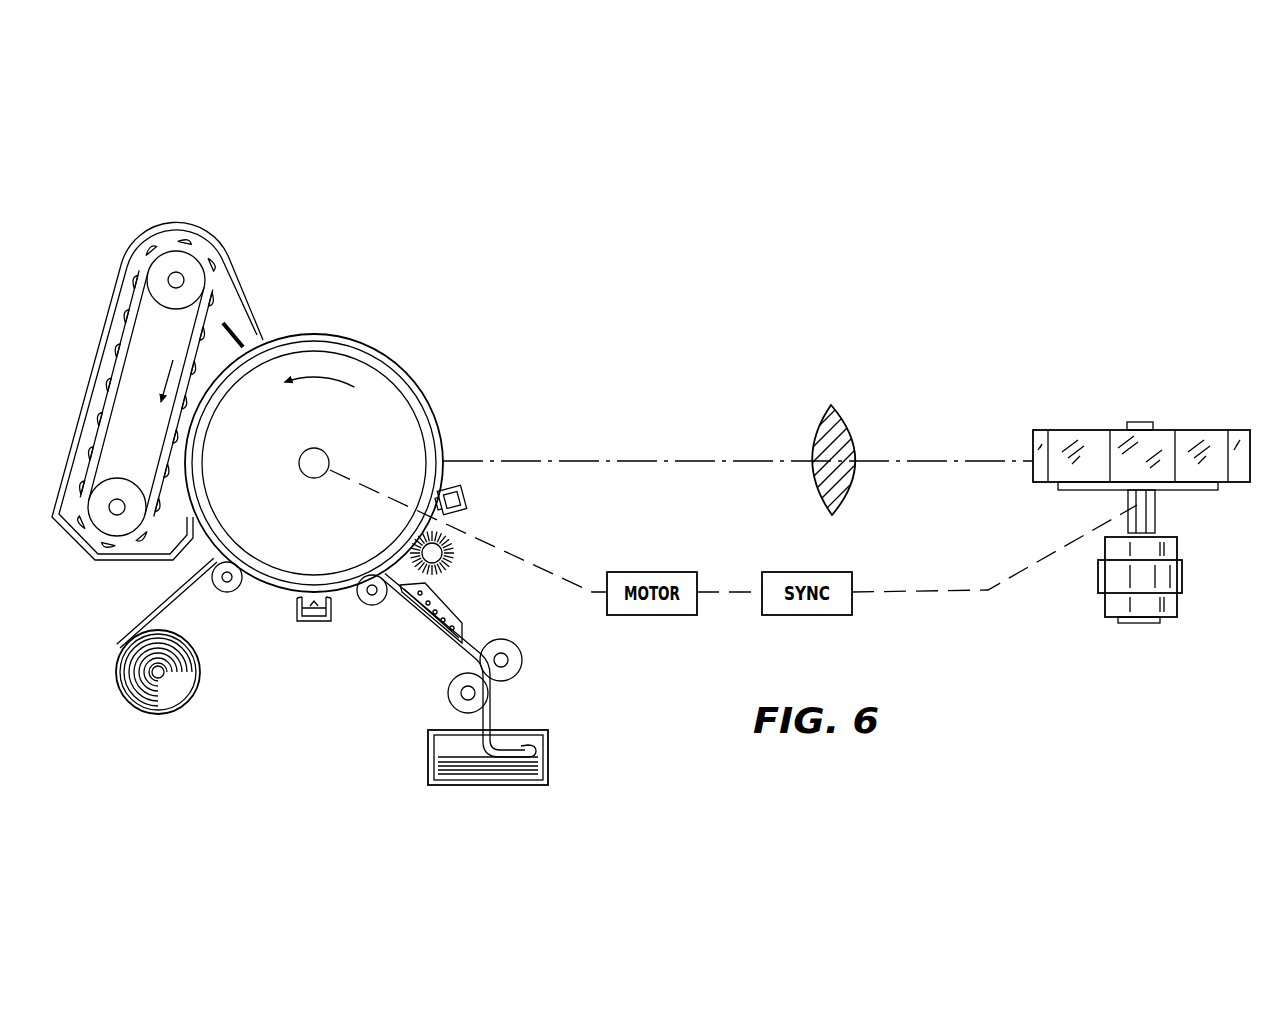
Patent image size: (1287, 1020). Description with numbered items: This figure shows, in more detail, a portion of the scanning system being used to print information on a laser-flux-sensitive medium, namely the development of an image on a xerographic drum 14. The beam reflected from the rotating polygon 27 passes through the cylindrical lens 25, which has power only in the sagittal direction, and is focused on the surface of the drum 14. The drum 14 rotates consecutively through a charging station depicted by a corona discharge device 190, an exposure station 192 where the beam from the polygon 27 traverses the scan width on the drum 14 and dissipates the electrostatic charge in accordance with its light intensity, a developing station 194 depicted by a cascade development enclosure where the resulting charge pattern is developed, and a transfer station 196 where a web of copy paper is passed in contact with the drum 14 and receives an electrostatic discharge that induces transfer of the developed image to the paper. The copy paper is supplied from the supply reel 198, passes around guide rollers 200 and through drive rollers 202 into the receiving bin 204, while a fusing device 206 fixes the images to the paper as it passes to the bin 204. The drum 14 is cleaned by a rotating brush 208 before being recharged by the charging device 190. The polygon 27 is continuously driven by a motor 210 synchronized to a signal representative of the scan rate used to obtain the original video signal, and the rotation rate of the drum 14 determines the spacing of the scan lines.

The xerographic drum 14 is at (390, 358).
The developing station 194 is at (243, 298).
The exposure station 192 is at (447, 460).
The corona discharge device 190 is at (465, 498).
The rotating brush 208 is at (450, 555).
The guide rollers 200 is at (228, 592).
The transfer station 196 is at (313, 622).
The supply reel 198 is at (200, 673).
The fusing device 206 is at (463, 624).
The drive rollers 202 is at (452, 676).
The receiving bin 204 is at (548, 752).
The cylindrical lens 25 is at (855, 430).
The polygon 27 is at (1187, 430).
The motor 210 is at (1098, 583).